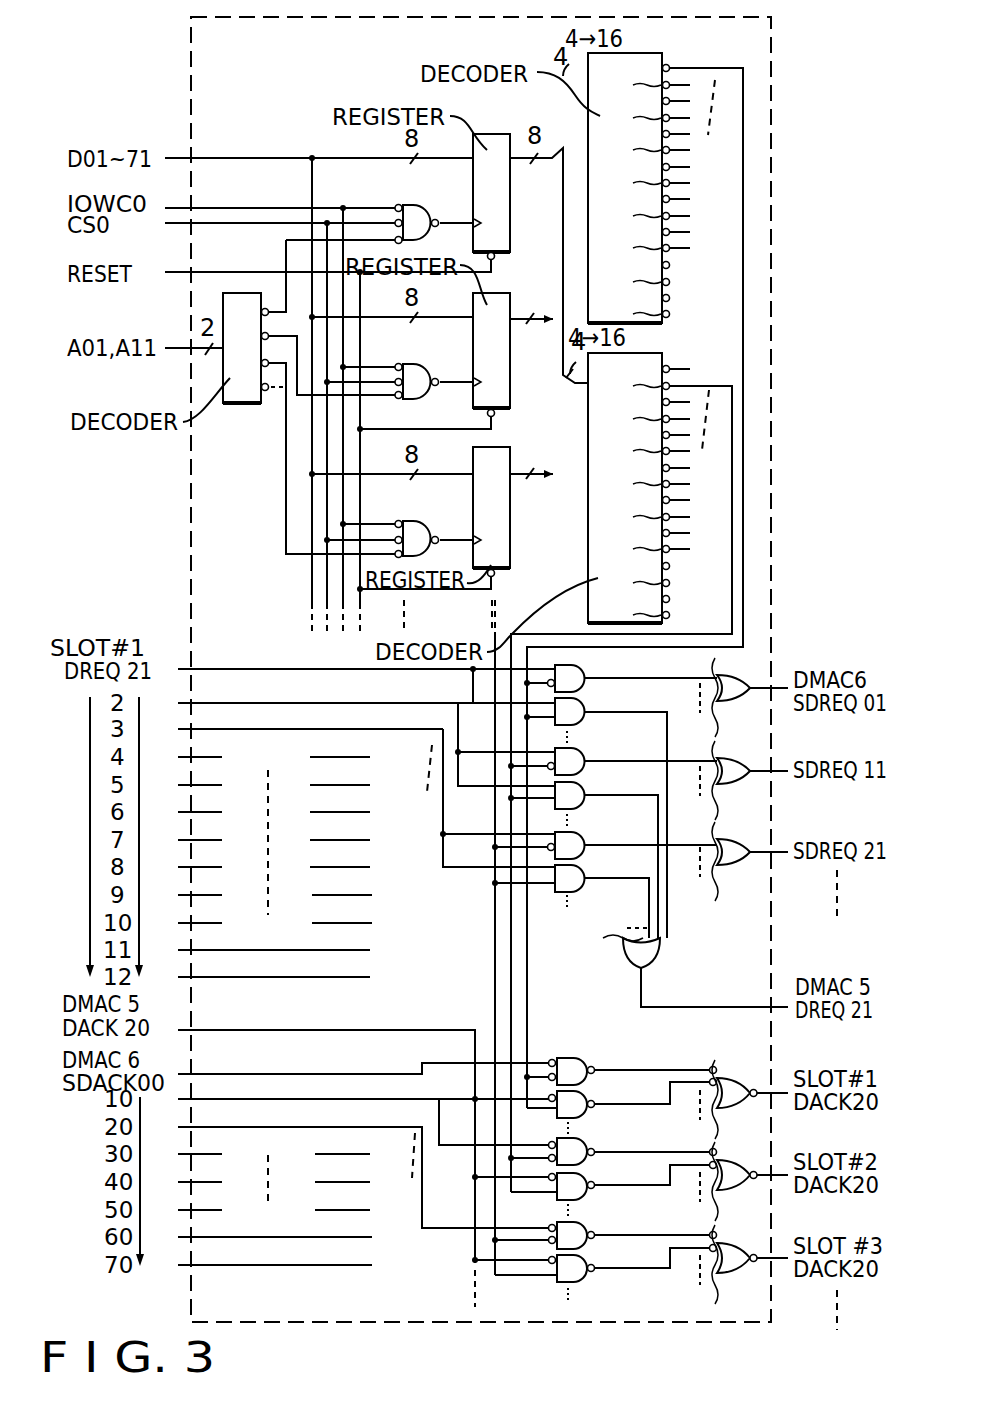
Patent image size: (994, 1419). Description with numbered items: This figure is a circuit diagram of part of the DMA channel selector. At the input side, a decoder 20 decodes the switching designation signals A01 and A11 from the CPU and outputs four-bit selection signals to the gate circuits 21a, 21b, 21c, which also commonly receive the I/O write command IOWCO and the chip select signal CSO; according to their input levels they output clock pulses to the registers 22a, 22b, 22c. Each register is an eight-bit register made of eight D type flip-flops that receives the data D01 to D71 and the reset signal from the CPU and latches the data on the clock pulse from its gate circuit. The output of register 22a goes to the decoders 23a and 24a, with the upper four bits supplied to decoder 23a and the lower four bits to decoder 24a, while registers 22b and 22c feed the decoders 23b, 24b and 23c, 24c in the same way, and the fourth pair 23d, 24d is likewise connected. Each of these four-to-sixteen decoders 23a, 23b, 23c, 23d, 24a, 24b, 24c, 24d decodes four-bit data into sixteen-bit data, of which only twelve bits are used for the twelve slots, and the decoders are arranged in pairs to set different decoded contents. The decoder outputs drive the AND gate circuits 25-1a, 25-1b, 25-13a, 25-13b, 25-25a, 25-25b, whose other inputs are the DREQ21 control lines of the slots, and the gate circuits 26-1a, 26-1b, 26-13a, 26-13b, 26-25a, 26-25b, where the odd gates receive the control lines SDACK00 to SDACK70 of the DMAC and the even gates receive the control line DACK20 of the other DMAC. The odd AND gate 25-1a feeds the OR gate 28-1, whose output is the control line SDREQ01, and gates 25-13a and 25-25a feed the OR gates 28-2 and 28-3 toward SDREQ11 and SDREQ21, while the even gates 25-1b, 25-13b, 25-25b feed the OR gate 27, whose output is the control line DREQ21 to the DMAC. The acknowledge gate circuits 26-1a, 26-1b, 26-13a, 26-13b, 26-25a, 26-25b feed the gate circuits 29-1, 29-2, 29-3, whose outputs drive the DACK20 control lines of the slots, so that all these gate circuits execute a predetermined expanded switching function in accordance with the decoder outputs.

The decoder 20 is at (241, 406).
The gate circuit 21a is at (420, 205).
The gate circuit 21b is at (420, 363).
The gate circuit 21c is at (424, 520).
The register 22a is at (489, 130).
The register 22b is at (514, 266).
The register 22c is at (512, 442).
The decoder 23a is at (675, 177).
The decoder 23b is at (542, 335).
The decoder 23c is at (541, 493).
The decoder 23d is at (676, 50).
The decoder 24a is at (672, 468).
The decoder 24b is at (548, 326).
The decoder 24c is at (545, 483).
The decoder 24d is at (669, 356).
The gate circuit 25-1a is at (584, 671).
The gate circuit 25-1b is at (587, 707).
The gate circuit 25-13a is at (581, 752).
The gate circuit 25-13b is at (581, 787).
The gate circuit 25-25a is at (586, 839).
The gate circuit 25-25b is at (578, 892).
The gate circuit 26-1a is at (582, 1056).
The gate circuit 26-1b is at (588, 1092).
The gate circuit 26-13a is at (588, 1130).
The gate circuit 26-13b is at (588, 1174).
The gate circuit 26-25a is at (593, 1215).
The gate circuit 26-25b is at (590, 1283).
The gate circuit 27 is at (658, 947).
The gate circuit 28-1 is at (734, 665).
The gate circuit 28-2 is at (727, 758).
The gate circuit 28-3 is at (727, 838).
The gate circuit 29-1 is at (742, 1076).
The gate circuit 29-2 is at (742, 1159).
The gate circuit 29-3 is at (742, 1242).